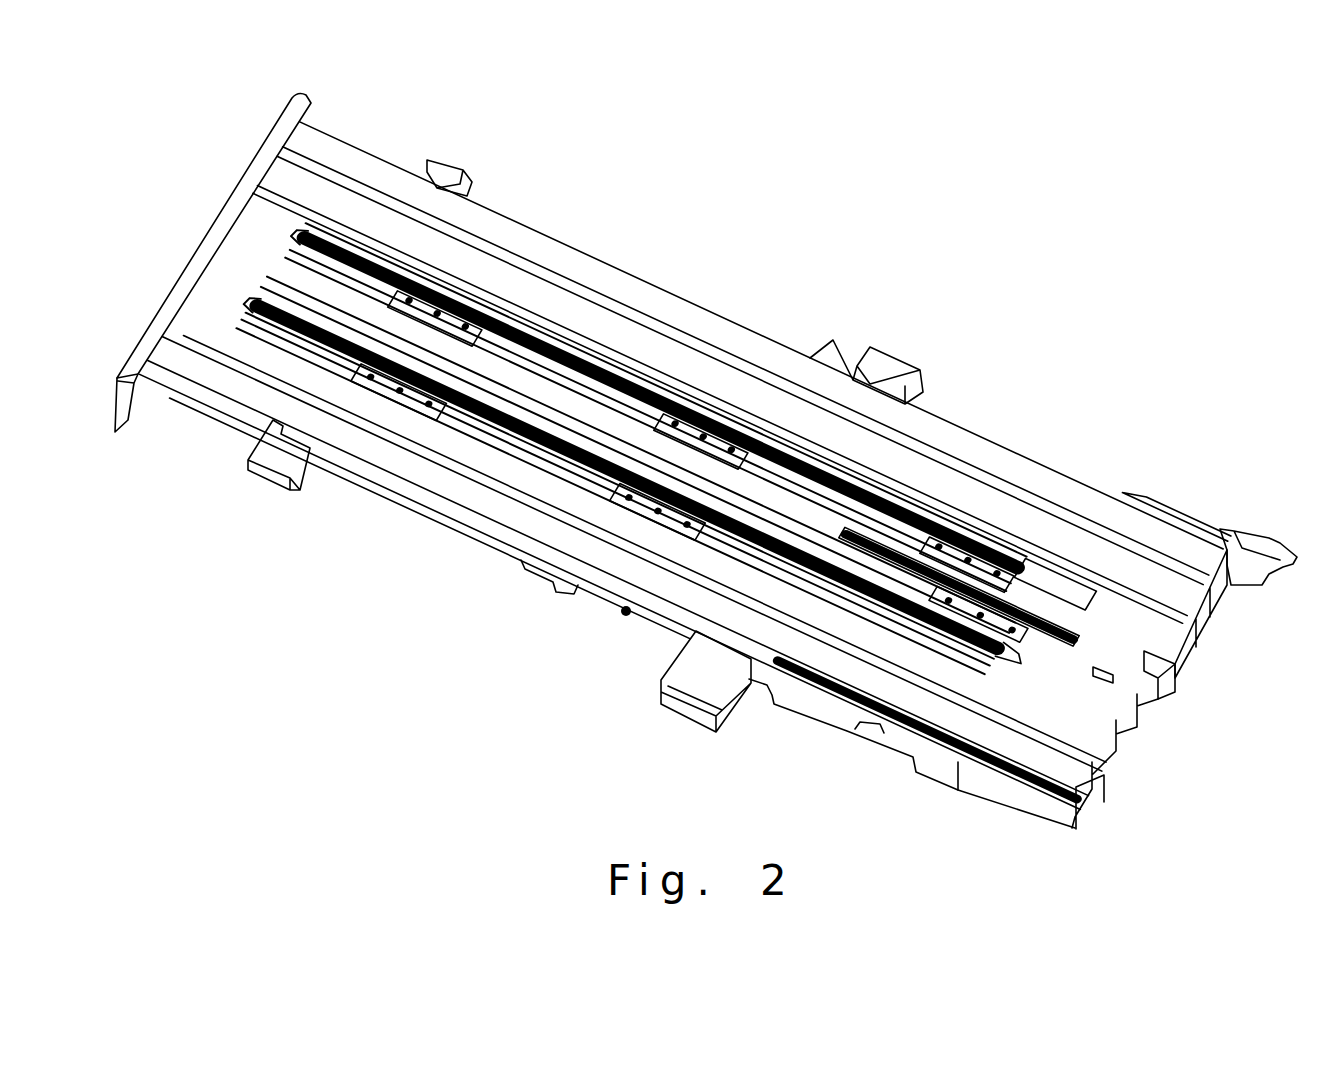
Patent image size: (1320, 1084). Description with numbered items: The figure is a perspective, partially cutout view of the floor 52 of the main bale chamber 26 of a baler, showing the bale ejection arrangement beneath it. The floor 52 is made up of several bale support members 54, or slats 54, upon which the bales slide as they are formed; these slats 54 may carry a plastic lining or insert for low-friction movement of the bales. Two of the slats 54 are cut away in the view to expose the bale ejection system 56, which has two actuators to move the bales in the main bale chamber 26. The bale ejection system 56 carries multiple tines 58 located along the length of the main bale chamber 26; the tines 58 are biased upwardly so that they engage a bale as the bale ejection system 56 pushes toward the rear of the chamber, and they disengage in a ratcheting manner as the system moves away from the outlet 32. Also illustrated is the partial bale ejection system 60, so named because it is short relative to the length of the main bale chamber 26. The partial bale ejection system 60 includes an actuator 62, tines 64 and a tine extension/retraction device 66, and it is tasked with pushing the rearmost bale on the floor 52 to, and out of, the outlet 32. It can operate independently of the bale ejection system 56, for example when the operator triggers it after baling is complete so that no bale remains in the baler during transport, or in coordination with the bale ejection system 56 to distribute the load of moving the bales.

The main bale chamber 26 is at (1008, 316).
The outlet 32 is at (1212, 753).
The floor 52 is at (1060, 453).
The bale support members 54 is at (521, 300).
The bale ejection system 56 is at (270, 228).
The tines 58 is at (402, 293).
The partial bale ejection system 60 is at (1165, 690).
The actuator 62 is at (848, 540).
The tines 64 is at (1027, 583).
The tine extension/retraction device 66 is at (1018, 658).